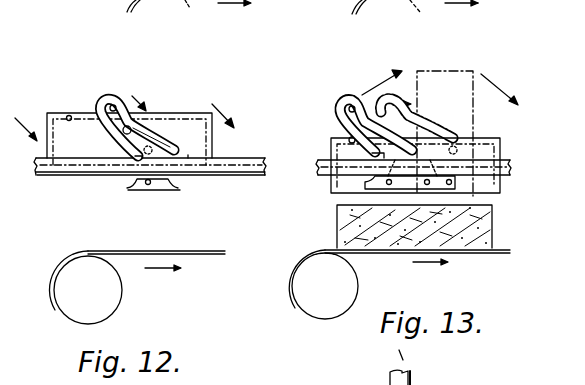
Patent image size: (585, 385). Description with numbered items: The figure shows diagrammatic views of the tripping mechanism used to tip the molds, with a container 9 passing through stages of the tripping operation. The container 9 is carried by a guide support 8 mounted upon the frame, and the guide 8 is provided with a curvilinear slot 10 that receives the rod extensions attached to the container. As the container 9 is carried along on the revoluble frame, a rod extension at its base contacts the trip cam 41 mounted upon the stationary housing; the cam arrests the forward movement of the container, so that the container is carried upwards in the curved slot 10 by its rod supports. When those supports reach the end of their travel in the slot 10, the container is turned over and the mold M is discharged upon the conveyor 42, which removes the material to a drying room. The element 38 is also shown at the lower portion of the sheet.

In FIG. 12, the guide support 8 is at (188, 157).
In FIG. 13, the guide support 8 is at (373, 138).
In FIG. 12, the container 9 is at (172, 115).
In FIG. 13, the container 9 is at (426, 156).
In FIG. 12, the curvilinear slot 10 is at (176, 149).
In FIG. 13, the curvilinear slot 10 is at (352, 110).
In FIG. 13, the guide 38 is at (411, 383).
In FIG. 12, the trip cam 41 is at (128, 188).
In FIG. 12, the conveyor 42 is at (160, 250).
In FIG. 13, the conveyor 42 is at (462, 257).
In FIG. 13, the mold M is at (338, 228).